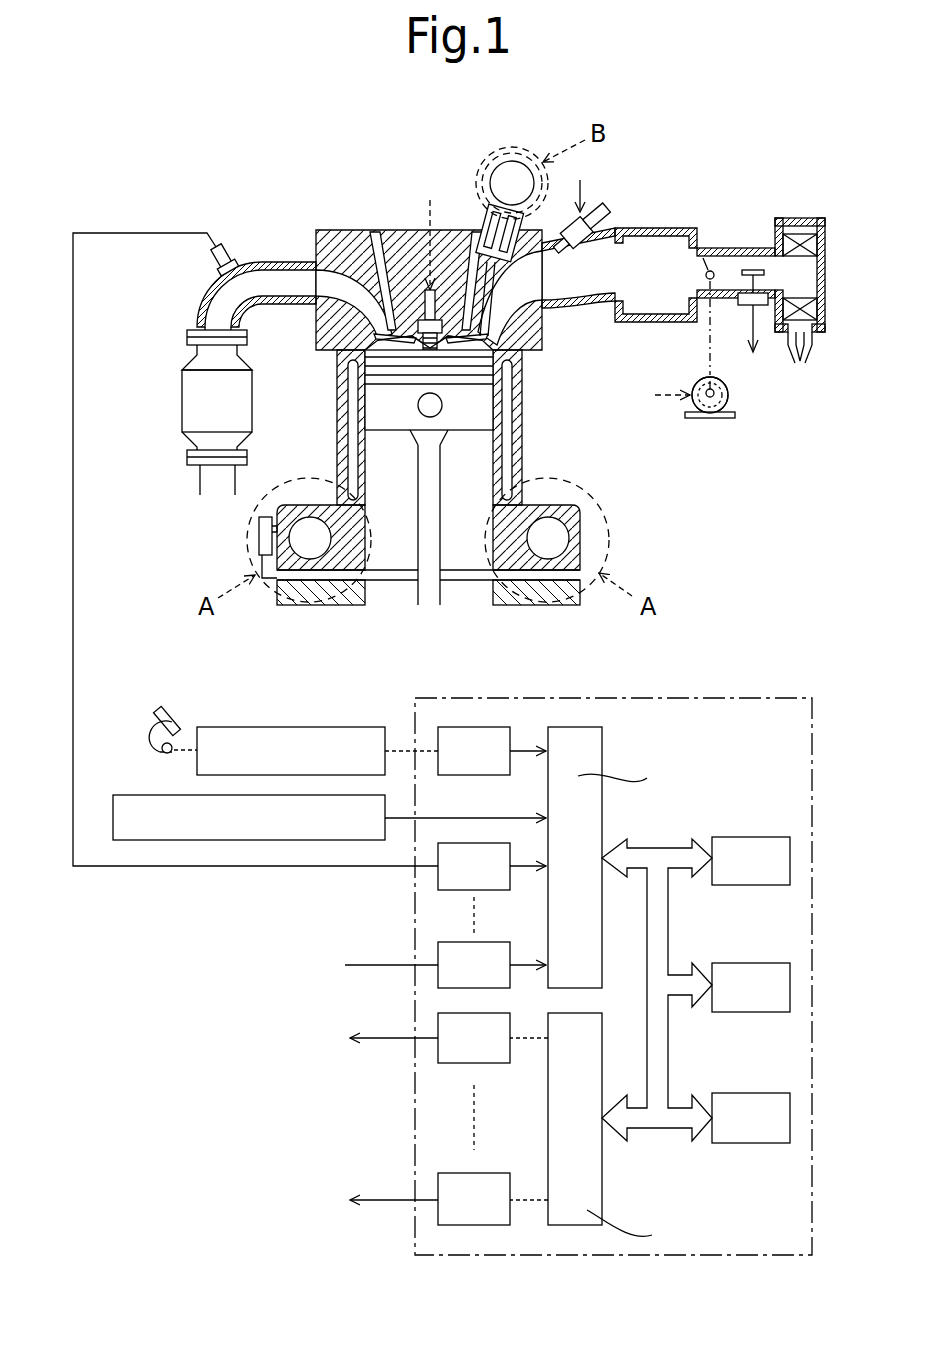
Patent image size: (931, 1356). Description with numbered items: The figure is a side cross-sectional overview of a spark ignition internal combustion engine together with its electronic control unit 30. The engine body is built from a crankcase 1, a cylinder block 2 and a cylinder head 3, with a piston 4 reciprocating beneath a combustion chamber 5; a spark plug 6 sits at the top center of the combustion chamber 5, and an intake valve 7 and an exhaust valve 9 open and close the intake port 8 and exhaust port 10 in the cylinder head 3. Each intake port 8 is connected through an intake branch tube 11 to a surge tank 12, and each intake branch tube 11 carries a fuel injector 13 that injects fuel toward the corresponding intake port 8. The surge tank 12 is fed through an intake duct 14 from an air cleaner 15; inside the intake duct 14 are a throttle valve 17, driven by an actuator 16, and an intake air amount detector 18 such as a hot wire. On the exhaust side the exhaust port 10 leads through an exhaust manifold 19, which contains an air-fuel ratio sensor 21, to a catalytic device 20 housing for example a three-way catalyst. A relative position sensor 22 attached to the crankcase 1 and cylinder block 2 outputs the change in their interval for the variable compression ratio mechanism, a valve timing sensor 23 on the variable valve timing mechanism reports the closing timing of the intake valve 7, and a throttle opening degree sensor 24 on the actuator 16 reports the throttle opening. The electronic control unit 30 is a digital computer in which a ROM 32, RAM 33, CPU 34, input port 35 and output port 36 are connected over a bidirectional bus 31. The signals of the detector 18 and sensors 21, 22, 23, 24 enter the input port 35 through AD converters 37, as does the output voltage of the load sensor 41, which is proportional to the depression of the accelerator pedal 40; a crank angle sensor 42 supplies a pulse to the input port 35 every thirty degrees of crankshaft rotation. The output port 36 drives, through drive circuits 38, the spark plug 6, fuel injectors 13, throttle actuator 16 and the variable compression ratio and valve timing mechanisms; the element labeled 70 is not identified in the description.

The crankcase 1 is at (537, 582).
The cylinder block 2 is at (517, 442).
The cylinder head 3 is at (520, 330).
The piston 4 is at (377, 406).
The combustion chamber 5 is at (418, 345).
The spark plug 6 is at (425, 288).
The intake valve 7 is at (513, 398).
The intake port 8 is at (503, 295).
The exhaust valve 9 is at (360, 374).
The exhaust port 10 is at (337, 318).
The intake branch tube 11 is at (603, 240).
The surge tank 12 is at (672, 228).
The fuel injector 13 is at (593, 205).
The intake duct 14 is at (735, 248).
The air cleaner 15 is at (800, 218).
The actuator 16 is at (690, 412).
The throttle valve 17 is at (713, 283).
The intake air amount detector 18 is at (768, 286).
The exhaust manifold 19 is at (272, 262).
The catalytic device 20 is at (193, 393).
The air-fuel ratio sensor 21 is at (220, 270).
The relative position sensor 22 is at (256, 535).
The valve timing sensor 23 is at (537, 157).
The throttle opening degree sensor 24 is at (730, 390).
The electronic control unit 30 is at (788, 698).
The bidirectional bus 31 is at (658, 850).
The ROM 32 is at (752, 837).
The RAM 33 is at (752, 963).
The CPU 34 is at (750, 1093).
The input port 35 is at (603, 744).
The output port 36 is at (603, 1200).
The AD converter 37 is at (482, 727).
The drive circuit 38 is at (438, 1182).
The accelerator pedal 40 is at (176, 712).
The load sensor 41 is at (296, 727).
The crank angle sensor 42 is at (140, 795).
The cam 70 is at (510, 178).